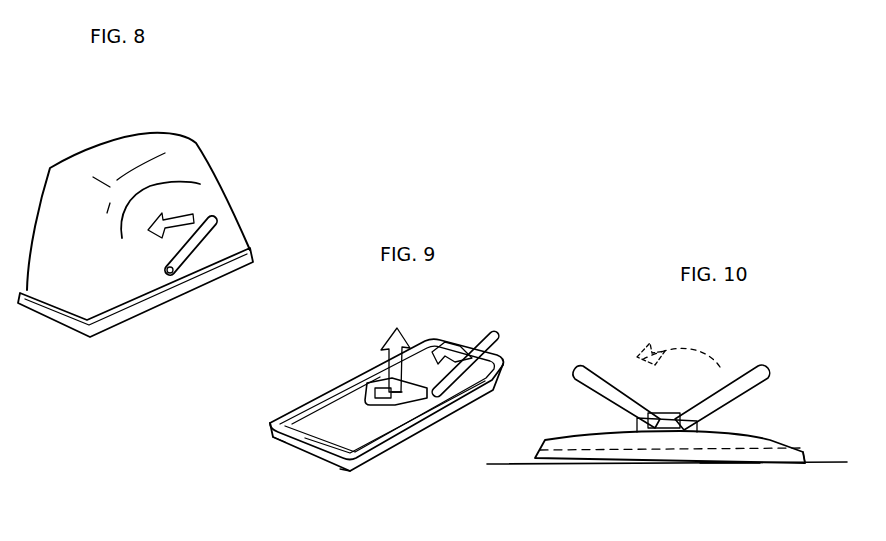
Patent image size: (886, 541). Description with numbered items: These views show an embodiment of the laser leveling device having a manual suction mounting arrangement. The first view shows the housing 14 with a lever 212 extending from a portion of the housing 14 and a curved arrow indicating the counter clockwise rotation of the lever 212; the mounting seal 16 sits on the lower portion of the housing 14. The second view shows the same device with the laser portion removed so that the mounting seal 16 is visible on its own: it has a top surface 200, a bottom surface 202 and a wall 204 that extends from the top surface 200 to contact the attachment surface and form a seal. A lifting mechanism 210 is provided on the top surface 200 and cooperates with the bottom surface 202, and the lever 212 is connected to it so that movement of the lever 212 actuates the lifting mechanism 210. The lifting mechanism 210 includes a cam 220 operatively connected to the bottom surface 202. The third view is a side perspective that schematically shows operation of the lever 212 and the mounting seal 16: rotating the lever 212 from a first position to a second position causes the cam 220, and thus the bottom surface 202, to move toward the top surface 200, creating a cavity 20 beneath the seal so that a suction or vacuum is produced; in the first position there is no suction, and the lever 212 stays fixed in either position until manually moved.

In FIG. 8, the housing 14 is at (62, 195).
In FIG. 8, the mounting seal 16 is at (72, 322).
In FIG. 9, the mounting seal 16 is at (241, 415).
In FIG. 10, the cavity 20 is at (663, 464).
In FIG. 9, the top surface 200 is at (323, 420).
In FIG. 10, the top surface 200 is at (773, 442).
In FIG. 9, the bottom surface 202 is at (350, 471).
In FIG. 10, the bottom surface 202 is at (757, 472).
In FIG. 9, the wall 204 is at (300, 443).
In FIG. 10, the wall 204 is at (805, 453).
In FIG. 9, the lifting mechanism 210 is at (377, 373).
In FIG. 8, the lever 212 is at (203, 243).
In FIG. 9, the lever 212 is at (480, 353).
In FIG. 10, the lever 212 is at (753, 368).
In FIG. 9, the cam 220 is at (400, 395).